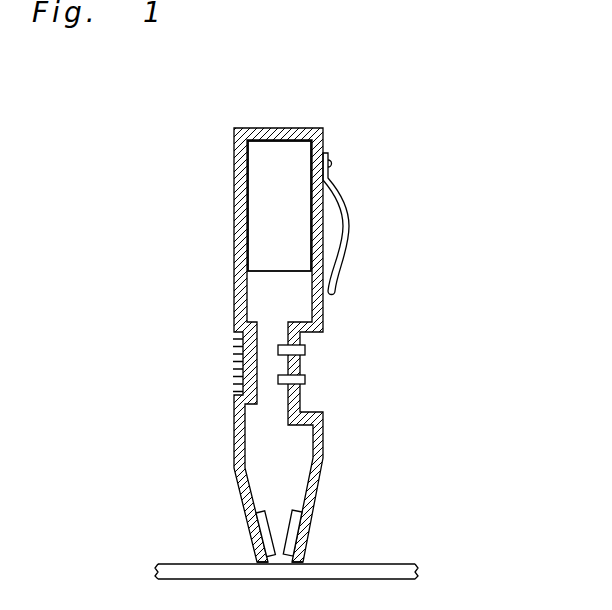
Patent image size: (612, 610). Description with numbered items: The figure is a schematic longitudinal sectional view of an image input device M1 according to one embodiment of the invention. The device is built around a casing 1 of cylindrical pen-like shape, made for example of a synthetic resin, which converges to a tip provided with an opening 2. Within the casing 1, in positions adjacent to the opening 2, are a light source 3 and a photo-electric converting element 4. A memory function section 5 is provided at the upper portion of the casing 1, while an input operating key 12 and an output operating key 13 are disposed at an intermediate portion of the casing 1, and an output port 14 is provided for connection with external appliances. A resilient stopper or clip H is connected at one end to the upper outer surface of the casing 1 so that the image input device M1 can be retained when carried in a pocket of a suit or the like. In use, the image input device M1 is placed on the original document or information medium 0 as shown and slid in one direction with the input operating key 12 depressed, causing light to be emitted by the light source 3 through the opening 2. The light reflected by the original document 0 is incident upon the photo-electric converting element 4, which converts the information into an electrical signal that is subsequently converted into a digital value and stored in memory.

The image input device M1 is at (374, 135).
The casing 1 is at (236, 290).
The memory function section 5 is at (262, 213).
The resilient stopper or clip H is at (347, 208).
The output port 14 is at (242, 354).
The input operating key 12 is at (305, 350).
The output operating key 13 is at (305, 379).
The light source 3 is at (254, 509).
The photo-electric converting element 4 is at (300, 506).
The opening 2 is at (283, 559).
The original document or information medium 0 is at (187, 568).